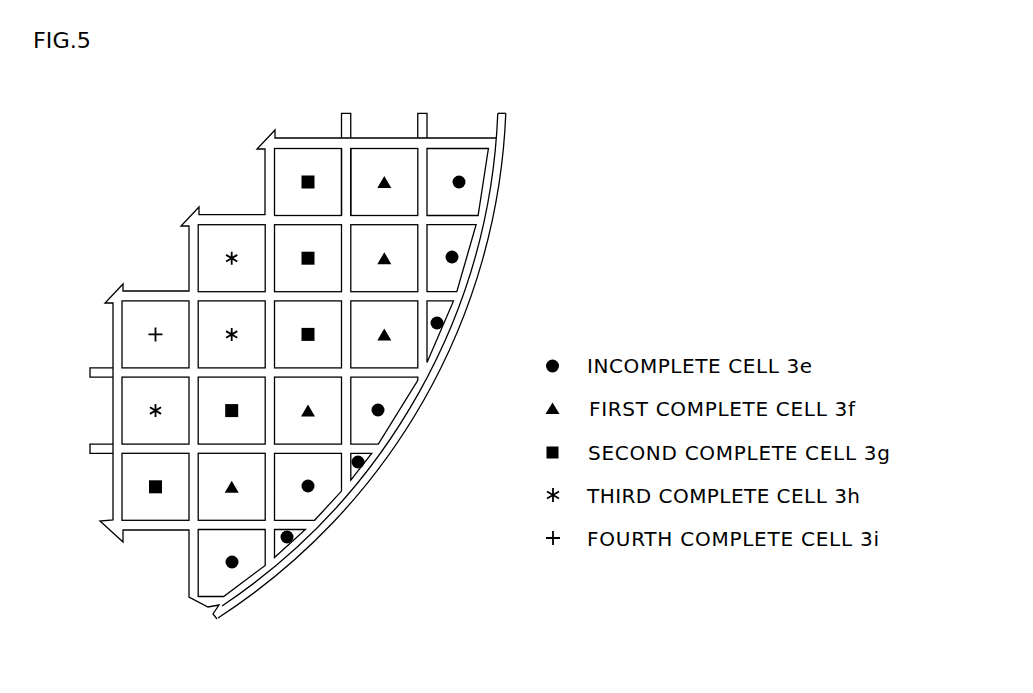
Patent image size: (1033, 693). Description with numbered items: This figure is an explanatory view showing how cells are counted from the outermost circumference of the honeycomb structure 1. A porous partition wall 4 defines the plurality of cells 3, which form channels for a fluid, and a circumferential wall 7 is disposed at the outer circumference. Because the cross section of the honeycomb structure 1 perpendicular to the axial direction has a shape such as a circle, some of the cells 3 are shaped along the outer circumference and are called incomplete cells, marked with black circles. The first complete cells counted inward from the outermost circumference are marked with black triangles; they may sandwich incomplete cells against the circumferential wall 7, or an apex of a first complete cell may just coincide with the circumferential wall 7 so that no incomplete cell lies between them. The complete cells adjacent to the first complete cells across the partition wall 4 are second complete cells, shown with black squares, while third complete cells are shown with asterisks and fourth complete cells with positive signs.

The honeycomb structure 1 is at (513, 108).
The cell 3 is at (299, 159).
The partition wall 4 is at (382, 145).
The circumferential wall 7 is at (498, 183).